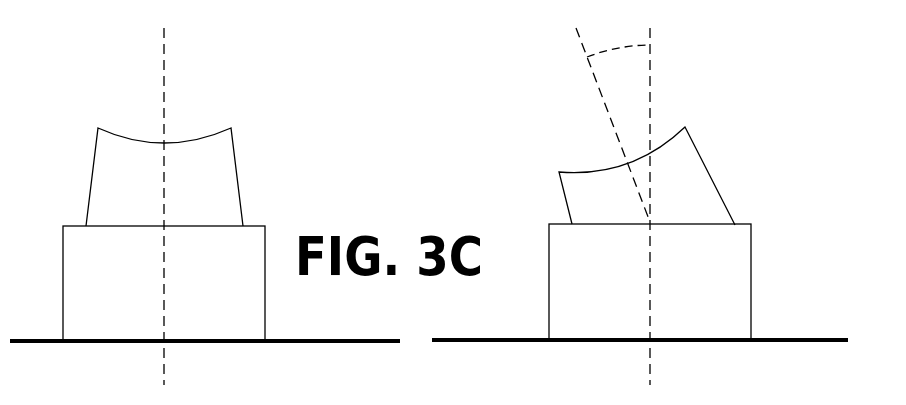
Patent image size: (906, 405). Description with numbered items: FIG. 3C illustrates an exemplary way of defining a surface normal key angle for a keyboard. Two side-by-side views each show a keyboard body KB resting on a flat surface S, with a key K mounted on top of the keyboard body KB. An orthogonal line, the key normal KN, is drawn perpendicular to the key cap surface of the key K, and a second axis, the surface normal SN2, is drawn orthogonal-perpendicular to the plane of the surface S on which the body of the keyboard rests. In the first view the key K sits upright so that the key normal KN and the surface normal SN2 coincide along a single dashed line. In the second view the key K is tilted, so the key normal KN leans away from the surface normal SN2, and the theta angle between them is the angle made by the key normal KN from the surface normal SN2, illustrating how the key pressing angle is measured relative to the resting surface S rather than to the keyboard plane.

The surface S is at (233, 343).
The keyboard body KB is at (407, 282).
The key K is at (233, 143).
The key normal KN is at (607, 110).
The surface normal SN2 is at (685, 57).